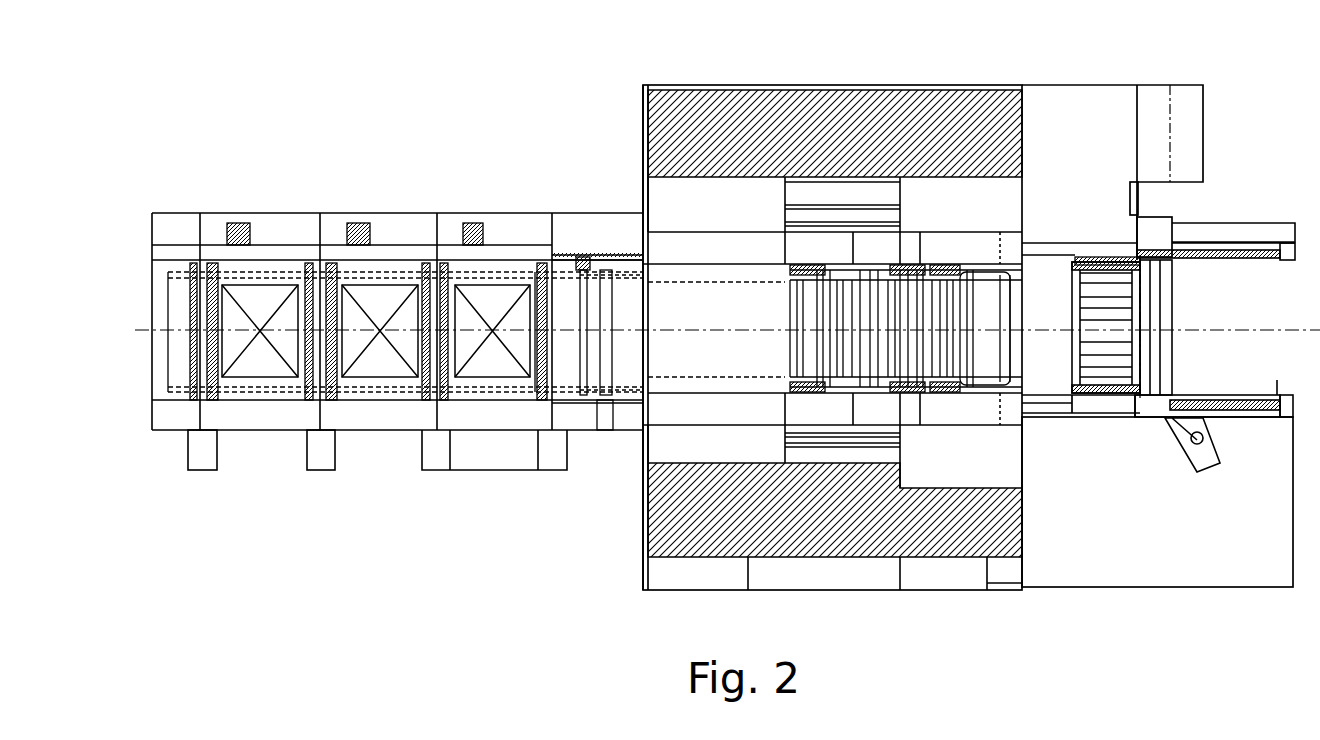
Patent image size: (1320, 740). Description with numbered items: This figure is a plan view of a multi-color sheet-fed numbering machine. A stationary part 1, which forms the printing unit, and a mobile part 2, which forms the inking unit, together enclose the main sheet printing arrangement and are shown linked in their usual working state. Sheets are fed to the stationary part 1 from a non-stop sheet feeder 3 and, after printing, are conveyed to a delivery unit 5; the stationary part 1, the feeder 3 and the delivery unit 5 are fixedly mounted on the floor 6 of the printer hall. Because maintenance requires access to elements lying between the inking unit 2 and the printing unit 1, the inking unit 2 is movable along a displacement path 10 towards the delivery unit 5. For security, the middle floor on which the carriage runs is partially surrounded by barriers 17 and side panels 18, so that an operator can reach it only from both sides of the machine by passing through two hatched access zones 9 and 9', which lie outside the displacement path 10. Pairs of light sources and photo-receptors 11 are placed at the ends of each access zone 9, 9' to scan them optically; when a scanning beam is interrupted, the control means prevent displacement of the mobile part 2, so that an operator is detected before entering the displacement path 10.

The stationary part 1 is at (916, 170).
The mobile part 2 is at (829, 180).
The non-stop sheet feeder 3 is at (1252, 222).
The delivery unit 5 is at (373, 200).
The floor 6 is at (408, 545).
The access zone 9 is at (835, 552).
The access zone 9' is at (835, 98).
The displacement path 10 is at (694, 345).
The light sources and photo-receptors 11 is at (1010, 130).
The barriers 17 is at (757, 87).
The side panels 18 is at (643, 94).